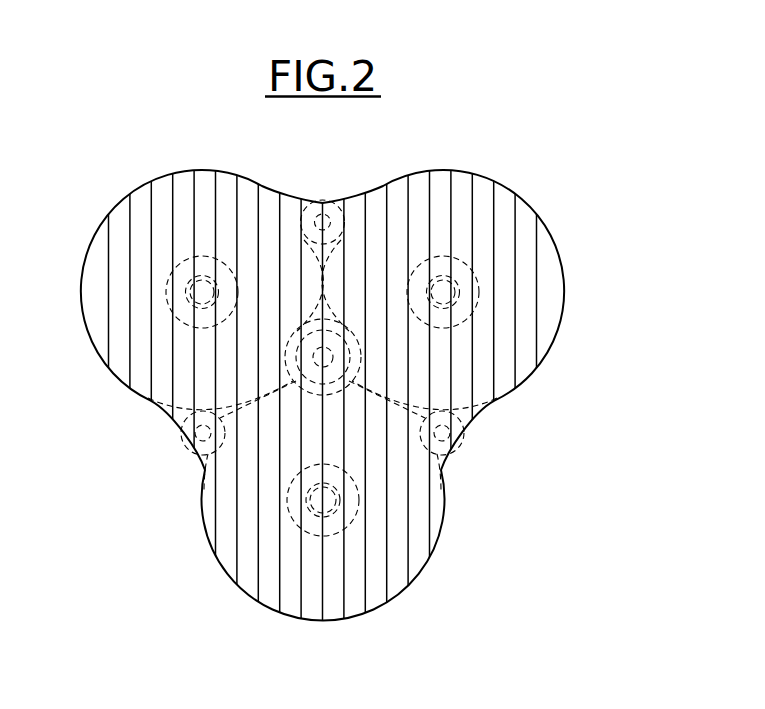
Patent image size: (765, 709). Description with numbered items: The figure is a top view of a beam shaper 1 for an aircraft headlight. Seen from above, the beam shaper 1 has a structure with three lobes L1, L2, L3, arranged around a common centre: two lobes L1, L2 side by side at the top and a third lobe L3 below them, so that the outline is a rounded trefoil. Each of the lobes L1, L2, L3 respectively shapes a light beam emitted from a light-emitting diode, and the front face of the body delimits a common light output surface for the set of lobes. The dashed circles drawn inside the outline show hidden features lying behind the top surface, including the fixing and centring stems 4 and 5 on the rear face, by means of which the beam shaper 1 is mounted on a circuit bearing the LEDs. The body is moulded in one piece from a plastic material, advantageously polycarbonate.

The beam shaper 1 is at (566, 374).
The first lobe L1 is at (171, 161).
The second lobe L2 is at (477, 161).
The third lobe L3 is at (459, 511).
The fixing and centring stem 4 is at (196, 437).
The fixing and centring stem 5 is at (344, 339).